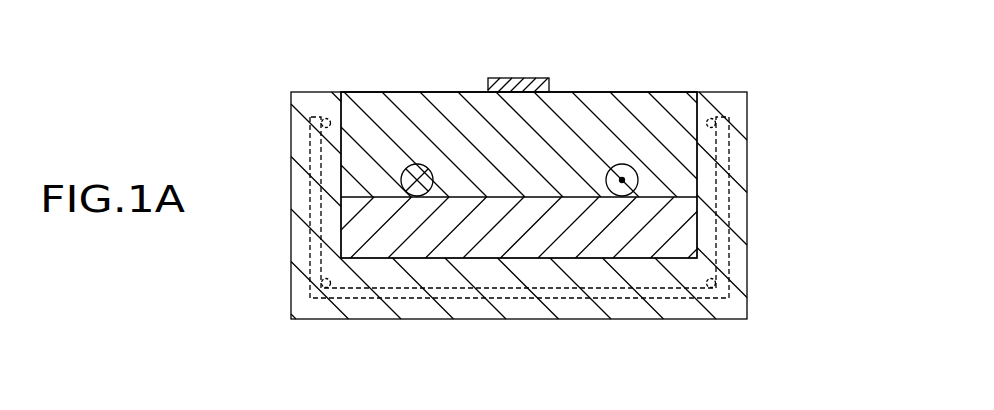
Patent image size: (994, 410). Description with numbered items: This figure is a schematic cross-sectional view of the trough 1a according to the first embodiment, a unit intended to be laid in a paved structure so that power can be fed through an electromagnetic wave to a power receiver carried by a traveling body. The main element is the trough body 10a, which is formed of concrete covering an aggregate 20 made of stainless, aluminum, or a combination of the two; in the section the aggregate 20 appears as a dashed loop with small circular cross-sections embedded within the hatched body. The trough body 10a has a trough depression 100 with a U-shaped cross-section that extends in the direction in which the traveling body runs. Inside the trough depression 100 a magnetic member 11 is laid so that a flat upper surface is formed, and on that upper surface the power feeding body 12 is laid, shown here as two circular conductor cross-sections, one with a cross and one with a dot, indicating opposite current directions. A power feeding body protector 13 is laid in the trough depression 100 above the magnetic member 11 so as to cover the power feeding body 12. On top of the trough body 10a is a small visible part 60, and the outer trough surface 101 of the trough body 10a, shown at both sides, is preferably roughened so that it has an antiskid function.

The trough 1a is at (815, 71).
The trough body 10a is at (747, 205).
The trough surface 101 is at (317, 91).
The power feeding body protector 13 is at (373, 103).
The magnetic member 11 is at (418, 245).
The trough depression 100 is at (526, 257).
The power feeding body 12 is at (417, 164).
The visible part 60 is at (520, 78).
The aggregate 20 is at (567, 296).